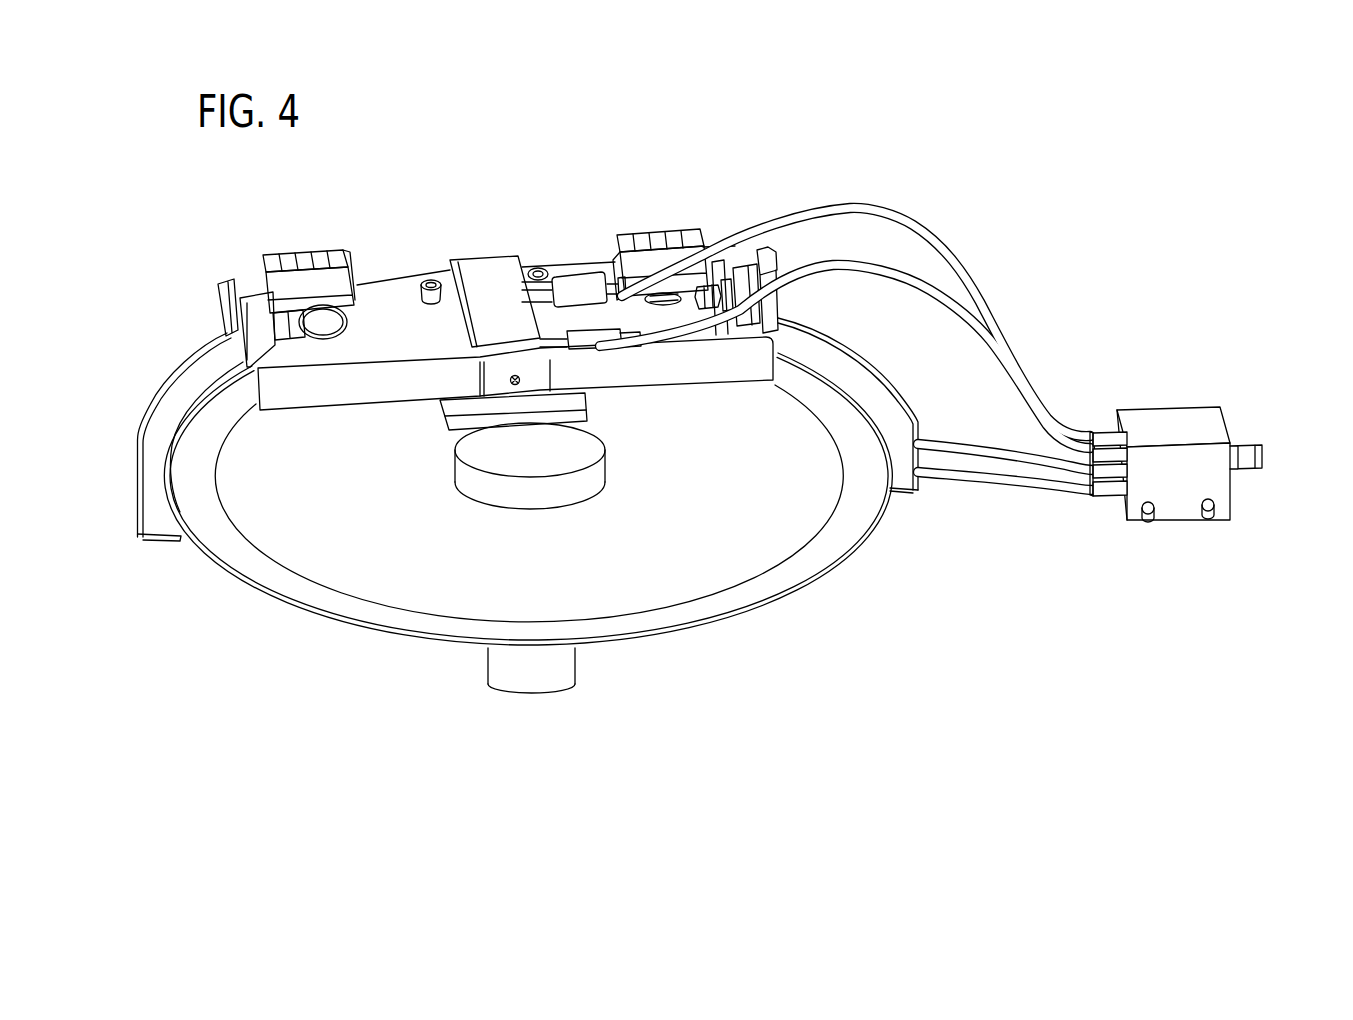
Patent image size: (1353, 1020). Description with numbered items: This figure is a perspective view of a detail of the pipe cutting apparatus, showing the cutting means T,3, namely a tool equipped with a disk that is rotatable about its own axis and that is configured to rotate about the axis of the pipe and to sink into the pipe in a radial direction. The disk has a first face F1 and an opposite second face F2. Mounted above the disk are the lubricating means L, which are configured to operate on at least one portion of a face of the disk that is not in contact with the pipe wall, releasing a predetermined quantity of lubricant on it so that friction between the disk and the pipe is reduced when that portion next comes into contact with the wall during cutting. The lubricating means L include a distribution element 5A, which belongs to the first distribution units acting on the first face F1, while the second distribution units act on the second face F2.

The distribution element 5A is at (492, 278).
The lubricating means L is at (519, 259).
The cutting means with disk T,3 is at (296, 610).
The first face F1 is at (662, 563).
The second face F2 is at (662, 645).